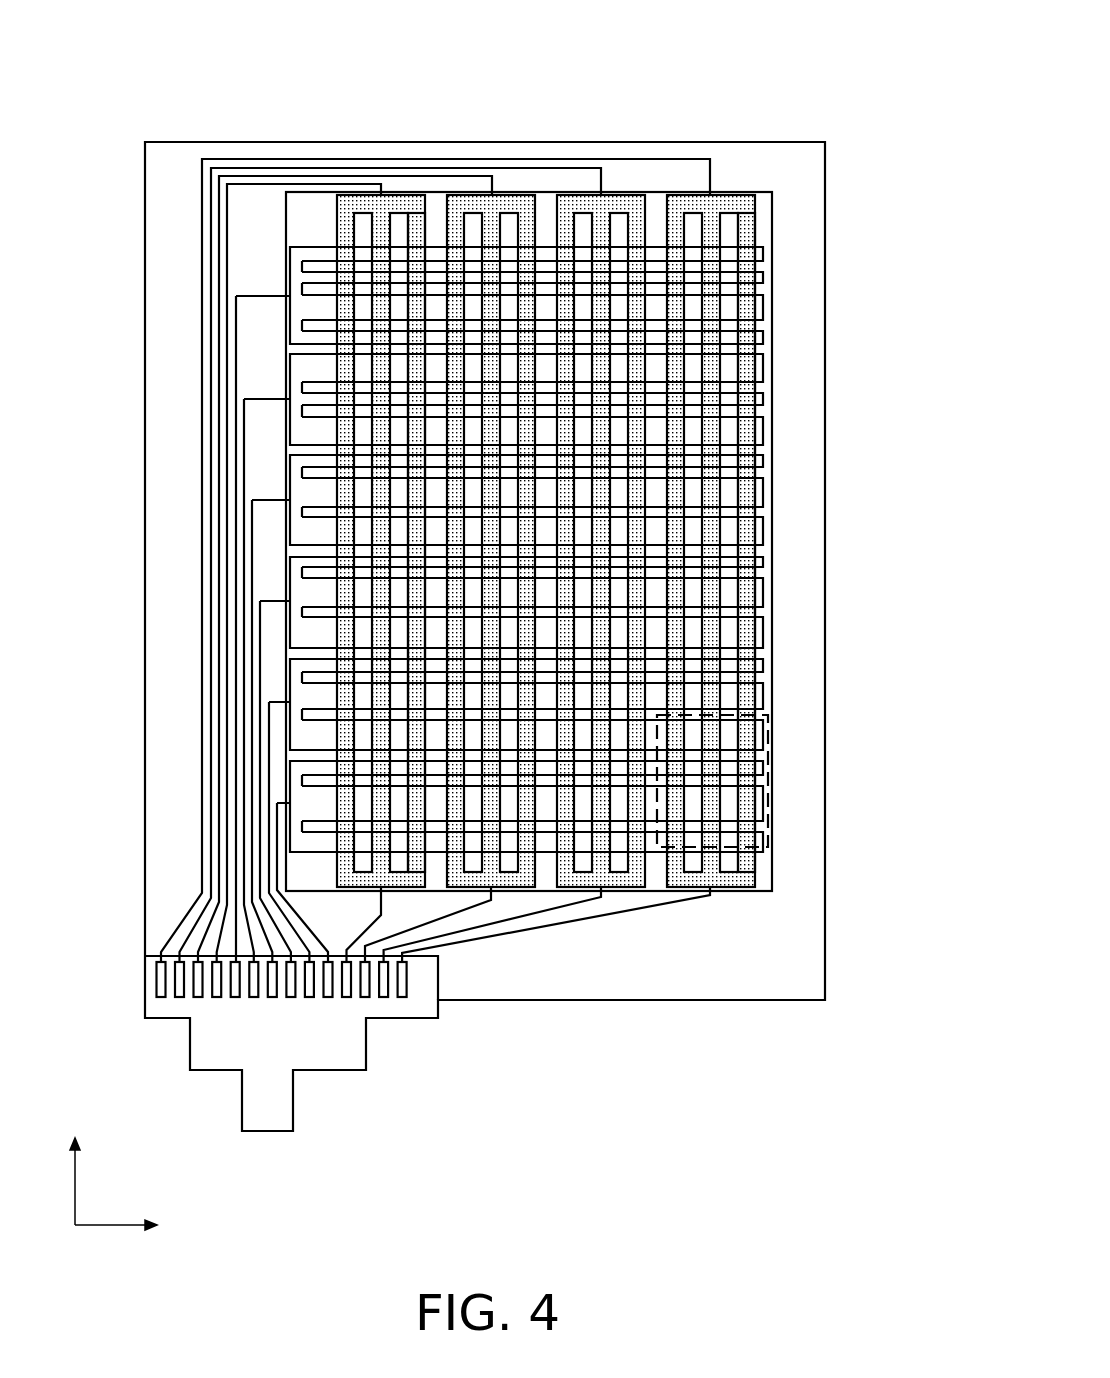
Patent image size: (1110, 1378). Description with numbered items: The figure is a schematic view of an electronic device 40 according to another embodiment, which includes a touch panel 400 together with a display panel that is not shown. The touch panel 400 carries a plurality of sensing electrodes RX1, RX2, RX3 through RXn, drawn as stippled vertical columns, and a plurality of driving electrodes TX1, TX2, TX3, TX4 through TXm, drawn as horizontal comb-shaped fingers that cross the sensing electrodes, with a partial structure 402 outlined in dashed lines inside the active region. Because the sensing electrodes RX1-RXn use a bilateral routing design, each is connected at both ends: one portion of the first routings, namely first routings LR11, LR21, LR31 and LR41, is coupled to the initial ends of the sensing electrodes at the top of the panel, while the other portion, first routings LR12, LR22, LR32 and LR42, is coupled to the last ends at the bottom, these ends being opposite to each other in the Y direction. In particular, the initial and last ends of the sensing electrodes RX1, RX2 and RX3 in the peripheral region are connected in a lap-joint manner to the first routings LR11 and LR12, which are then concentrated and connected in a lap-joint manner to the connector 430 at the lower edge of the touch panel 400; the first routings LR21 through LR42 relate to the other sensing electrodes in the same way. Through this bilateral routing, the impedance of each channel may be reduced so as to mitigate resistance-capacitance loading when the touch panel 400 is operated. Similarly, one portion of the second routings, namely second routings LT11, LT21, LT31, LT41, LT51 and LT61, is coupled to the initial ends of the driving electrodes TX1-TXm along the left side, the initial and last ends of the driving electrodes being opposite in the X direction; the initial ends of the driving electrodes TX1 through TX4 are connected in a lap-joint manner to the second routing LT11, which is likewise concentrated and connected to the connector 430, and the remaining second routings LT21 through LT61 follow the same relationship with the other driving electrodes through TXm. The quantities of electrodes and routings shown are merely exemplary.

The electronic device 40 is at (852, 1193).
The touch panel 400 is at (827, 966).
The partial structure 402 is at (768, 744).
The connector 430 is at (189, 1047).
The first routing LR11 is at (245, 182).
The first routing LR21 is at (460, 174).
The first routing LR31 is at (570, 167).
The first routing LR41 is at (676, 158).
The first routing LR12 is at (370, 913).
The first routing LR22 is at (468, 905).
The first routing LR32 is at (577, 905).
The first routing LR42 is at (673, 905).
The sensing electrode RX1 is at (338, 205).
The sensing electrode RX2 is at (377, 208).
The sensing electrode RX3 is at (418, 208).
The sensing electrode RXn is at (748, 210).
The driving electrode TX1 is at (762, 252).
The driving electrode TX2 is at (762, 277).
The driving electrode TX3 is at (763, 304).
The driving electrode TX4 is at (762, 338).
The driving electrode TXm is at (758, 840).
The second routing LT11 is at (276, 295).
The second routing LT21 is at (276, 398).
The second routing LT31 is at (276, 499).
The second routing LT41 is at (276, 600).
The second routing LT51 is at (276, 701).
The second routing LT61 is at (276, 802).